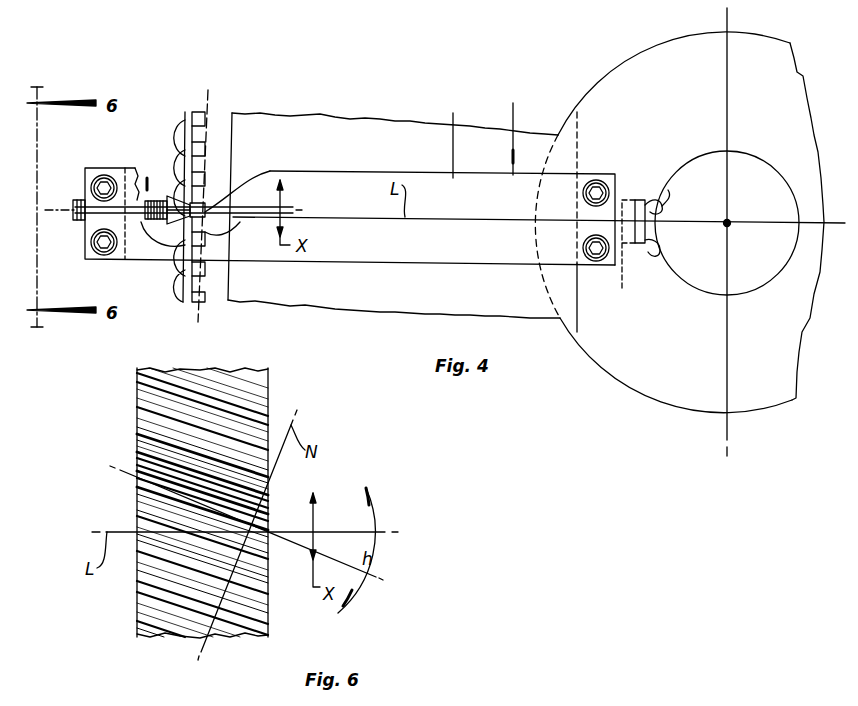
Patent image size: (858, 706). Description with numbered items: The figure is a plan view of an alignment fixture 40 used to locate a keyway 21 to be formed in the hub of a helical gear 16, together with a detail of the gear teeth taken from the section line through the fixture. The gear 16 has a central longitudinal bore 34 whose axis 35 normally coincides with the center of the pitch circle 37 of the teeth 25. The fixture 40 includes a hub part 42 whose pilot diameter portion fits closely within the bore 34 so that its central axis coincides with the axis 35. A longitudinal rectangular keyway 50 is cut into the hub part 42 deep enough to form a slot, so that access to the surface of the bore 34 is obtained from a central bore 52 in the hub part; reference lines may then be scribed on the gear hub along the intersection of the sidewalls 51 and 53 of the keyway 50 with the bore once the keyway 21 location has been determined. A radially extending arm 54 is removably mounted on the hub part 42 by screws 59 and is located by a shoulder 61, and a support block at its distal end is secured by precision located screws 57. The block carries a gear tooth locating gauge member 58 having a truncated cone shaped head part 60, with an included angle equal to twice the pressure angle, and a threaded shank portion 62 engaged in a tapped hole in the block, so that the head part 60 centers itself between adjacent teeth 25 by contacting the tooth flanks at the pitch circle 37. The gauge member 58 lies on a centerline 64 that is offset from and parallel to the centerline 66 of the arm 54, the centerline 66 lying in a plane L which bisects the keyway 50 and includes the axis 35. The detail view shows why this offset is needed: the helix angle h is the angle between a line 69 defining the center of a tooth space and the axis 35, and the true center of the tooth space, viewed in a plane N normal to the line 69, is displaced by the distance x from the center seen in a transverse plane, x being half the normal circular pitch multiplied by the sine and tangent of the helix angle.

In FIG. 4, the gear 16 is at (392, 124).
In FIG. 6, the gear 16 is at (137, 628).
In FIG. 4, the keyway 21 is at (634, 254).
In FIG. 4, the teeth 25 is at (185, 120).
In FIG. 6, the teeth 25 is at (137, 452).
In FIG. 4, the central longitudinal bore 34 is at (672, 190).
In FIG. 4, the axis 35 is at (732, 220).
In FIG. 6, the axis 35 is at (386, 530).
In FIG. 4, the pitch circle 37 is at (229, 112).
In FIG. 4, the alignment fixture 40 is at (513, 116).
In FIG. 4, the hub part 42 is at (612, 78).
In FIG. 4, the keyway 50 is at (658, 212).
In FIG. 4, the sidewall 51 is at (656, 200).
In FIG. 4, the central bore 52 is at (765, 138).
In FIG. 4, the sidewall 53 is at (656, 250).
In FIG. 4, the radially extending arm 54 is at (453, 113).
In FIG. 4, the screws 57 is at (100, 176).
In FIG. 4, the gear tooth locating gauge member 58 is at (146, 200).
In FIG. 4, the screws 59 is at (606, 185).
In FIG. 4, the head part 60 is at (172, 196).
In FIG. 4, the shoulder 61 is at (566, 318).
In FIG. 4, the threaded shank portion 62 is at (78, 220).
In FIG. 4, the centerline 64 is at (232, 207).
In FIG. 4, the centerline 66 is at (333, 222).
In FIG. 6, the line 69 is at (120, 470).